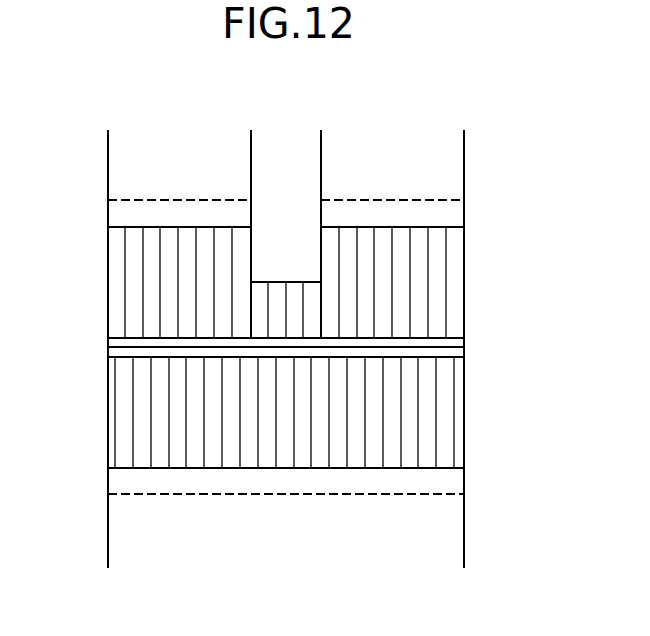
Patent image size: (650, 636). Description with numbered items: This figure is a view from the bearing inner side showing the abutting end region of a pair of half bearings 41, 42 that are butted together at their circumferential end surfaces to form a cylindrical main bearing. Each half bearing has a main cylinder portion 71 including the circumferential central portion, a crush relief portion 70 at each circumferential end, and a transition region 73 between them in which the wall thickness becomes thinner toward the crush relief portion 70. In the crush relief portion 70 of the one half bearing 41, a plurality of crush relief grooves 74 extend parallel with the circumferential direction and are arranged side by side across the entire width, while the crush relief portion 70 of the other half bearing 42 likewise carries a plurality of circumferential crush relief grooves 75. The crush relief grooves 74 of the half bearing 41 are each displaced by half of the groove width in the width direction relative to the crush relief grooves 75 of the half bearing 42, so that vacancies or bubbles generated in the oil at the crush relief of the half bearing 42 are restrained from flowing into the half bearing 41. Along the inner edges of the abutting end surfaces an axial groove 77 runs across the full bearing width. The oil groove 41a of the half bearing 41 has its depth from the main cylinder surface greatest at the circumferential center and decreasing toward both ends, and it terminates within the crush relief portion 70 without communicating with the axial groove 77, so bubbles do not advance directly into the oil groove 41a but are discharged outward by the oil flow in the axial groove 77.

The half bearing 41 is at (480, 152).
The oil groove 41a is at (307, 162).
The half bearing 42 is at (470, 518).
The crush relief portion 70 is at (470, 413).
The main cylinder portion 71 is at (452, 178).
The transition region 73 is at (452, 215).
The crush relief groove 74 is at (117, 267).
The crush relief groove 75 is at (123, 417).
The axial groove 77 is at (100, 345).